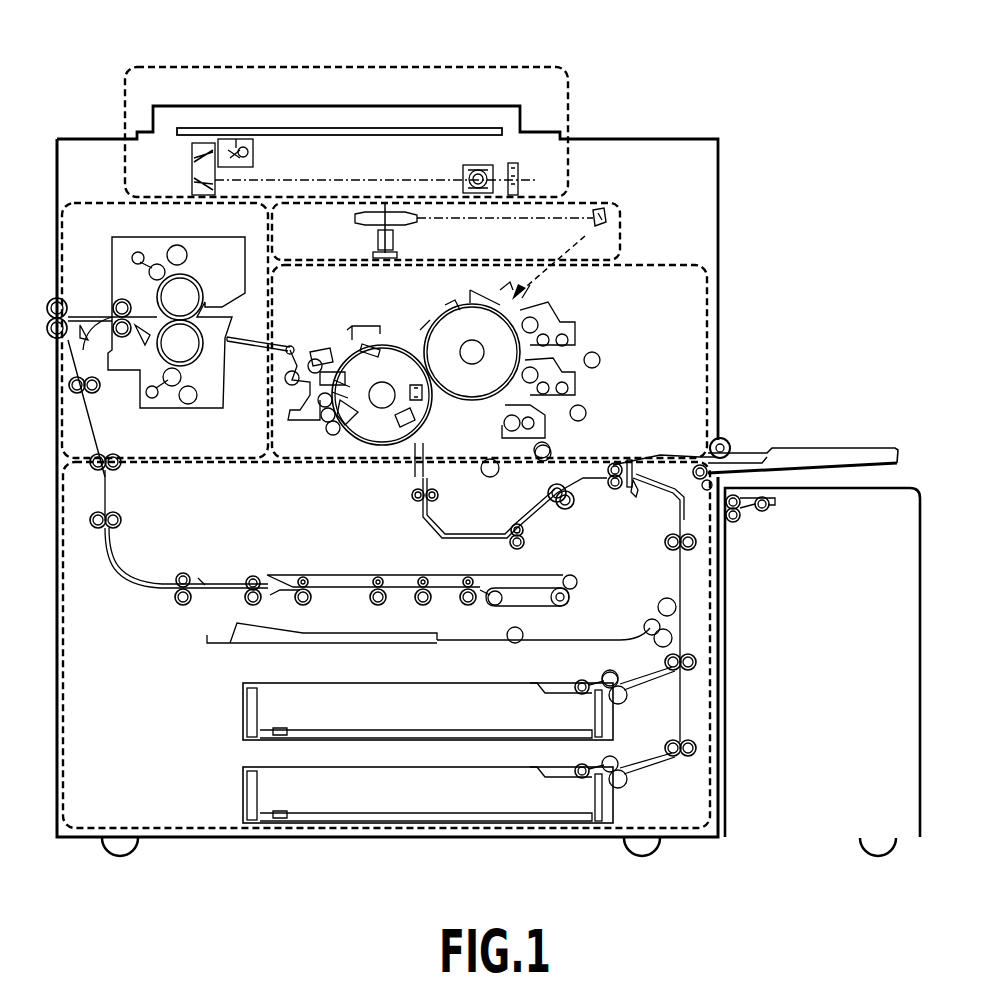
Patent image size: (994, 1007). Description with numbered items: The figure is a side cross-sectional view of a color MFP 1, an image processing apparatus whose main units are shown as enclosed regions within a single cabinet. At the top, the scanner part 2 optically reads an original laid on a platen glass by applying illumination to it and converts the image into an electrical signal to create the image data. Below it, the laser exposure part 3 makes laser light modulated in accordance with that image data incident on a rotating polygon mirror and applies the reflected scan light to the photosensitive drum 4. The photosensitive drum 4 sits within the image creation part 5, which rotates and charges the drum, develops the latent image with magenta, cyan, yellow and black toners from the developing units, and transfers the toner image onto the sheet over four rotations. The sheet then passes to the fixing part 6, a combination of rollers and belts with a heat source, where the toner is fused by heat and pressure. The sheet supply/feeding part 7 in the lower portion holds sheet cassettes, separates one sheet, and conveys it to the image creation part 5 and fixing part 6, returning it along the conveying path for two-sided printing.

The color MFP 1 is at (625, 113).
The scanner part 2 is at (342, 67).
The laser exposure part 3 is at (592, 203).
The photosensitive drum 4 is at (425, 332).
The image creation part 5 is at (680, 265).
The fixing part 6 is at (95, 203).
The sheet supply/feeding part 7 is at (187, 828).